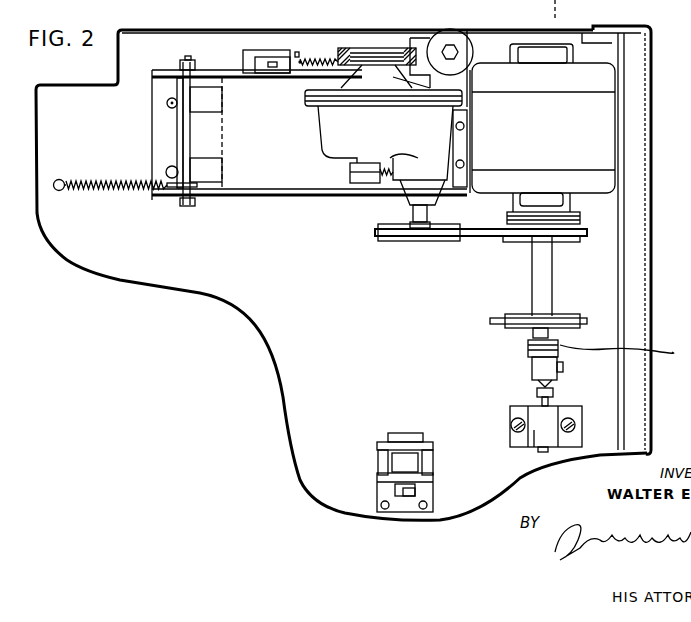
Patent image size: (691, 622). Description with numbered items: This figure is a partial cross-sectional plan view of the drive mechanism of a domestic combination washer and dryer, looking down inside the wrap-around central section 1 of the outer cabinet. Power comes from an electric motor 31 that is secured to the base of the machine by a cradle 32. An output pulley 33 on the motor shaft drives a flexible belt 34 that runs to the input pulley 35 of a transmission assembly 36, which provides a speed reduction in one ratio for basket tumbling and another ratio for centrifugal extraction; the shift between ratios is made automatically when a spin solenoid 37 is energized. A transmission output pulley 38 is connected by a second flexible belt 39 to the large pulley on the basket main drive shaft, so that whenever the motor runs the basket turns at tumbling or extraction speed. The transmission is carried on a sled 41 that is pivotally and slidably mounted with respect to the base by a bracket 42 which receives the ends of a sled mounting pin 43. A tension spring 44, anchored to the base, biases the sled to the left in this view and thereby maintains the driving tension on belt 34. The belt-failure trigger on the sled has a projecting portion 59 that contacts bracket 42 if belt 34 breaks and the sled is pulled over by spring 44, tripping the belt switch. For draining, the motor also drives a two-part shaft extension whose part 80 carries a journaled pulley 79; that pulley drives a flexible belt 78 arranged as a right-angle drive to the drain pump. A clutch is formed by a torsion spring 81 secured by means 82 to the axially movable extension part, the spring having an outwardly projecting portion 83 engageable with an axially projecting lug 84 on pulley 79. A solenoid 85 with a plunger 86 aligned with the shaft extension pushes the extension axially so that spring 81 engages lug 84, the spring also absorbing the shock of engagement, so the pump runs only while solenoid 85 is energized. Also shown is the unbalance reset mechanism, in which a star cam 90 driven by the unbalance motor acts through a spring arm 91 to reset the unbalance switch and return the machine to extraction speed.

The wrap-around central section 1 is at (652, 297).
The electric motor 31 is at (555, 139).
The cradle 32 is at (577, 202).
The output pulley 33 is at (568, 240).
The flexible belt 34 is at (473, 237).
The input pulley 35 is at (400, 244).
The transmission assembly 36 is at (396, 137).
The spin solenoid 37 is at (350, 172).
The transmission output pulley 38 is at (388, 48).
The flexible belt 39 is at (334, 50).
The sled 41 is at (268, 190).
The bracket 42 is at (160, 130).
The sled mounting pin 43 is at (194, 130).
The tension spring 44 is at (113, 192).
The projecting portion 59 is at (396, 460).
The flexible belt 78 is at (492, 323).
The pulley 79 is at (570, 330).
The shaft extension part 80 is at (548, 286).
The torsion spring 81 is at (530, 352).
The securing means 82 is at (563, 368).
The outwardly projecting portion 83 is at (625, 355).
The lug 84 is at (533, 335).
The solenoid 85 is at (535, 440).
The plunger 86 is at (537, 395).
The star cam 90 is at (418, 487).
The spring arm 91 is at (394, 493).